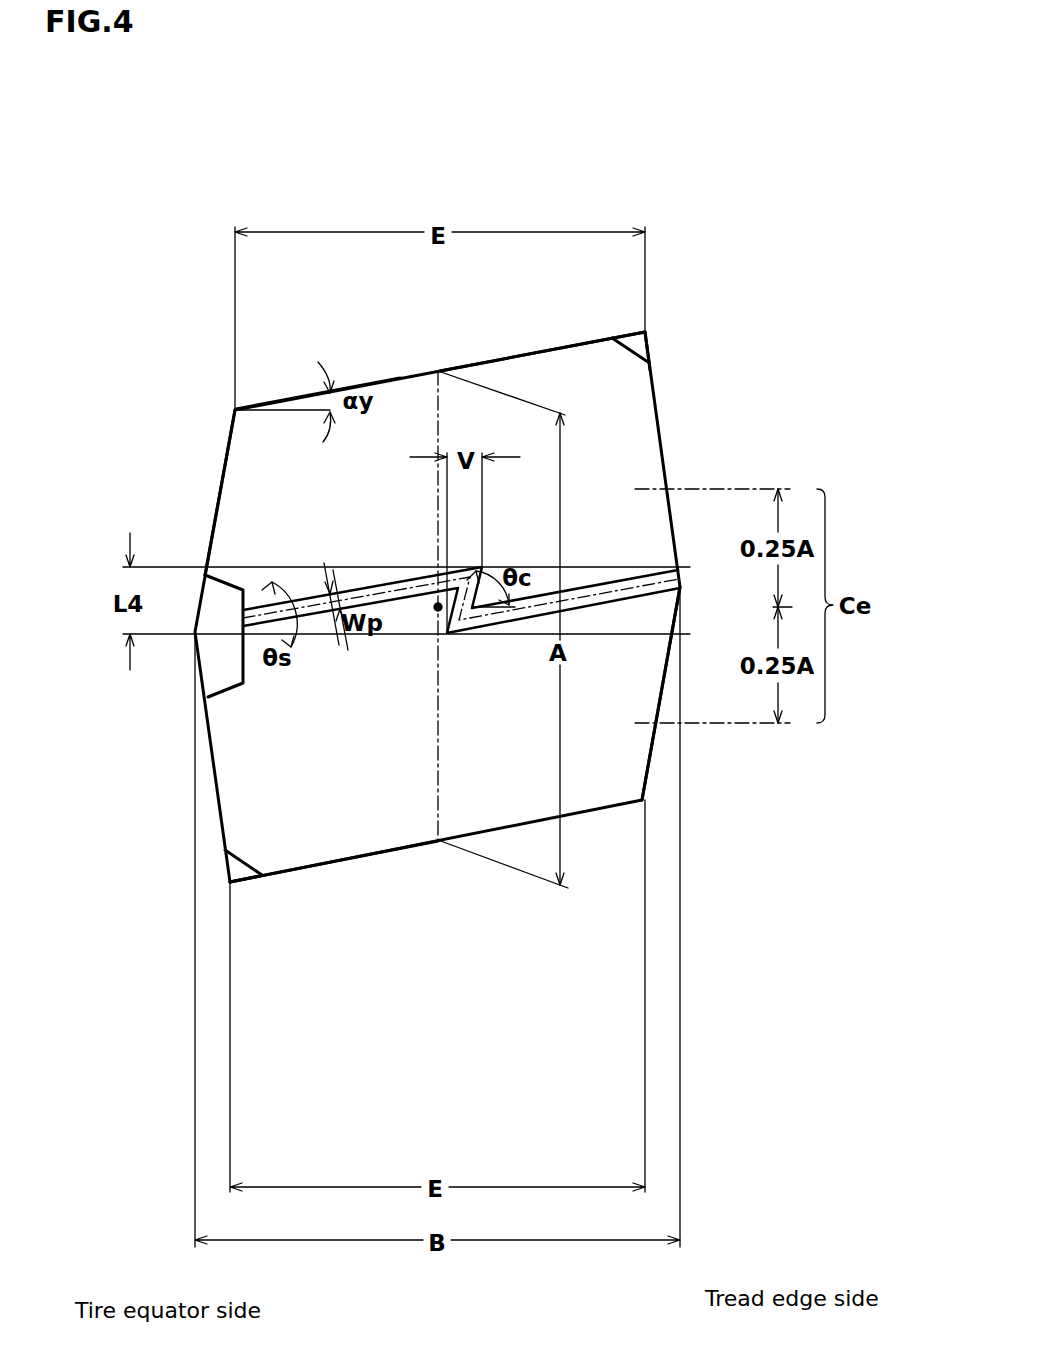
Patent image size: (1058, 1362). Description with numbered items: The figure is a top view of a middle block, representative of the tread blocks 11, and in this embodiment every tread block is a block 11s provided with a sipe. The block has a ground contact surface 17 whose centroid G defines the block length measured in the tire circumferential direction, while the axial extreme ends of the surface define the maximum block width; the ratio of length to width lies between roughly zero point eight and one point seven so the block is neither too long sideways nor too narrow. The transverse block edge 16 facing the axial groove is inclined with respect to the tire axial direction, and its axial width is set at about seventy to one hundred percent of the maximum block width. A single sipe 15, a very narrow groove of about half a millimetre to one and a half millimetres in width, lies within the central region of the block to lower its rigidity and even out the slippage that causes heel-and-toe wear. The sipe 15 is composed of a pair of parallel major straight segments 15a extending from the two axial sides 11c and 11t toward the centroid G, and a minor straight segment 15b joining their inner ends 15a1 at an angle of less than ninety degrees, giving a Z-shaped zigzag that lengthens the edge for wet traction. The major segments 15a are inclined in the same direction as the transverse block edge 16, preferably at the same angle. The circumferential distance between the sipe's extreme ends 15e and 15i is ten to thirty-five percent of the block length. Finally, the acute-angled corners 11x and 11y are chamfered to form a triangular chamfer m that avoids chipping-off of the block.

The tread block 11 is at (715, 240).
The block with the sipe 11s is at (205, 355).
The axial side of the block 11c is at (228, 442).
The acute-angled corner 11y is at (647, 330).
The acute-angled corner 11x is at (230, 882).
The axial side of the block 11t is at (650, 773).
The triangular chamfer m is at (643, 343).
The transverse block edge 16 is at (400, 378).
The ground contact surface 17 is at (622, 438).
The sipe 15 is at (539, 706).
The major straight segment 15a is at (415, 586).
The minor straight segment 15b is at (447, 633).
The inner end of the major straight segment 15a1 is at (483, 565).
The circumferential extreme end of the sipe 15e is at (483, 563).
The circumferential extreme end of the sipe 15i is at (443, 637).
The centroid G is at (435, 632).